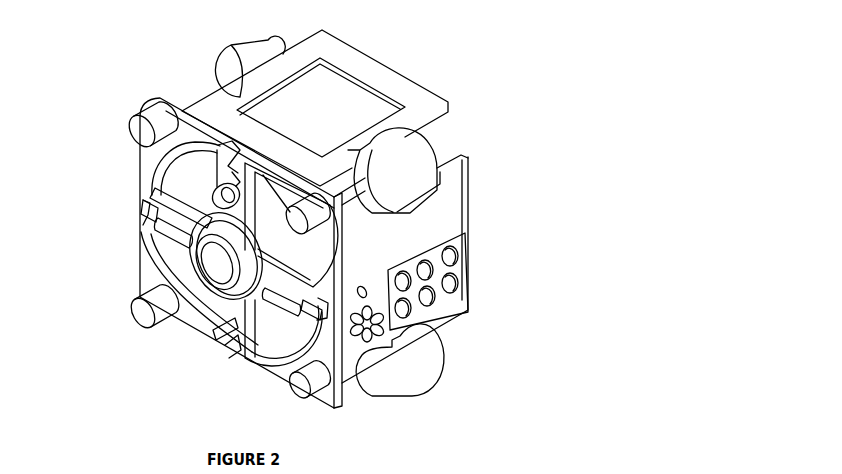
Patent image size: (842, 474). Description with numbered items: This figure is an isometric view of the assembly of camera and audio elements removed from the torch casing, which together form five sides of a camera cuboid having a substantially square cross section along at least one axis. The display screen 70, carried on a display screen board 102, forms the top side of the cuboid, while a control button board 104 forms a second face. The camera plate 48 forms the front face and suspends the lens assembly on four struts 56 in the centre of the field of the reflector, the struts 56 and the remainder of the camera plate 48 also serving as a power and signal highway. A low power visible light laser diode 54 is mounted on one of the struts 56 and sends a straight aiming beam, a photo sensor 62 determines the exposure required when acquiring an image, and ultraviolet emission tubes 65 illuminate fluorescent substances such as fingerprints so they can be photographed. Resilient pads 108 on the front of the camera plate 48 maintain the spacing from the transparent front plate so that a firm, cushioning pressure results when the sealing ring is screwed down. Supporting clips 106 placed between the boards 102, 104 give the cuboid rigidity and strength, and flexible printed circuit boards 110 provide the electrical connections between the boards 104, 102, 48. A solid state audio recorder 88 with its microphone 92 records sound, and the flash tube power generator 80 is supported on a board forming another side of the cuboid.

The camera plate 48 is at (155, 108).
The laser diode 54 is at (214, 196).
The struts 56 is at (240, 181).
The photo sensor 62 is at (220, 327).
The ultraviolet emission tubes 65 is at (173, 232).
The display screen 70 is at (327, 93).
The flash tube power generator 80 is at (367, 345).
The solid state audio recorder 88 is at (463, 277).
The microphone 92 is at (364, 286).
The display screen board 102 is at (388, 78).
The control button board 104 is at (452, 205).
The supporting clips 106 is at (240, 57).
The resilient pads 108 is at (137, 137).
The flexible printed circuit boards 110 is at (225, 157).